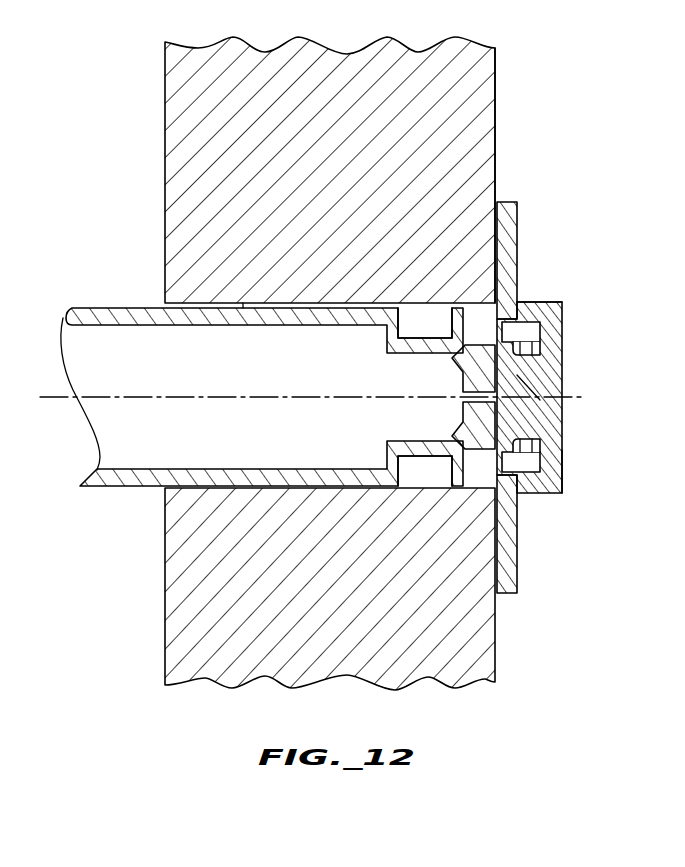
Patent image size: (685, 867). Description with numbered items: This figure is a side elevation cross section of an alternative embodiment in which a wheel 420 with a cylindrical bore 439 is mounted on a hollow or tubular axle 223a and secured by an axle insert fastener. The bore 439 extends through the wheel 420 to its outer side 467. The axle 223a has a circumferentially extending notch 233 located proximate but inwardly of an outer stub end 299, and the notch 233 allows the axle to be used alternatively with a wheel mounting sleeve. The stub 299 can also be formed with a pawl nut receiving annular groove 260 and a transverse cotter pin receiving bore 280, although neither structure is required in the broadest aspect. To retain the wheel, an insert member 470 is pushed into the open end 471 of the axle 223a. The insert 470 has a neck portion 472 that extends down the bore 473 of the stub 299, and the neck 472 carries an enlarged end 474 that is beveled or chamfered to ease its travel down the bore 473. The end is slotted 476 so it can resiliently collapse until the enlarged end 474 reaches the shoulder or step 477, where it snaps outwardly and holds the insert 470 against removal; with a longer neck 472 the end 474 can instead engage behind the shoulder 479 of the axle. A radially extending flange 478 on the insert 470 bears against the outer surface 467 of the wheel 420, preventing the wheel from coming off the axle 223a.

The wheel 420 is at (162, 151).
The outer side 467 is at (500, 128).
The shoulder or step 477 is at (462, 326).
The radially extending flange 478 is at (518, 215).
The annular groove 260 is at (503, 300).
The insert member 470 is at (572, 318).
The open end 471 is at (535, 365).
The bore 473 is at (518, 387).
The neck portion 472 is at (518, 415).
The outer stub end 299 is at (563, 472).
The transverse bore 280 is at (527, 452).
The shoulder 479 is at (390, 333).
The notch 233 is at (422, 458).
The slot 476 is at (462, 397).
The enlarged end 474 is at (463, 423).
The cylindrical bore 439 is at (230, 330).
The axle 223a is at (123, 487).